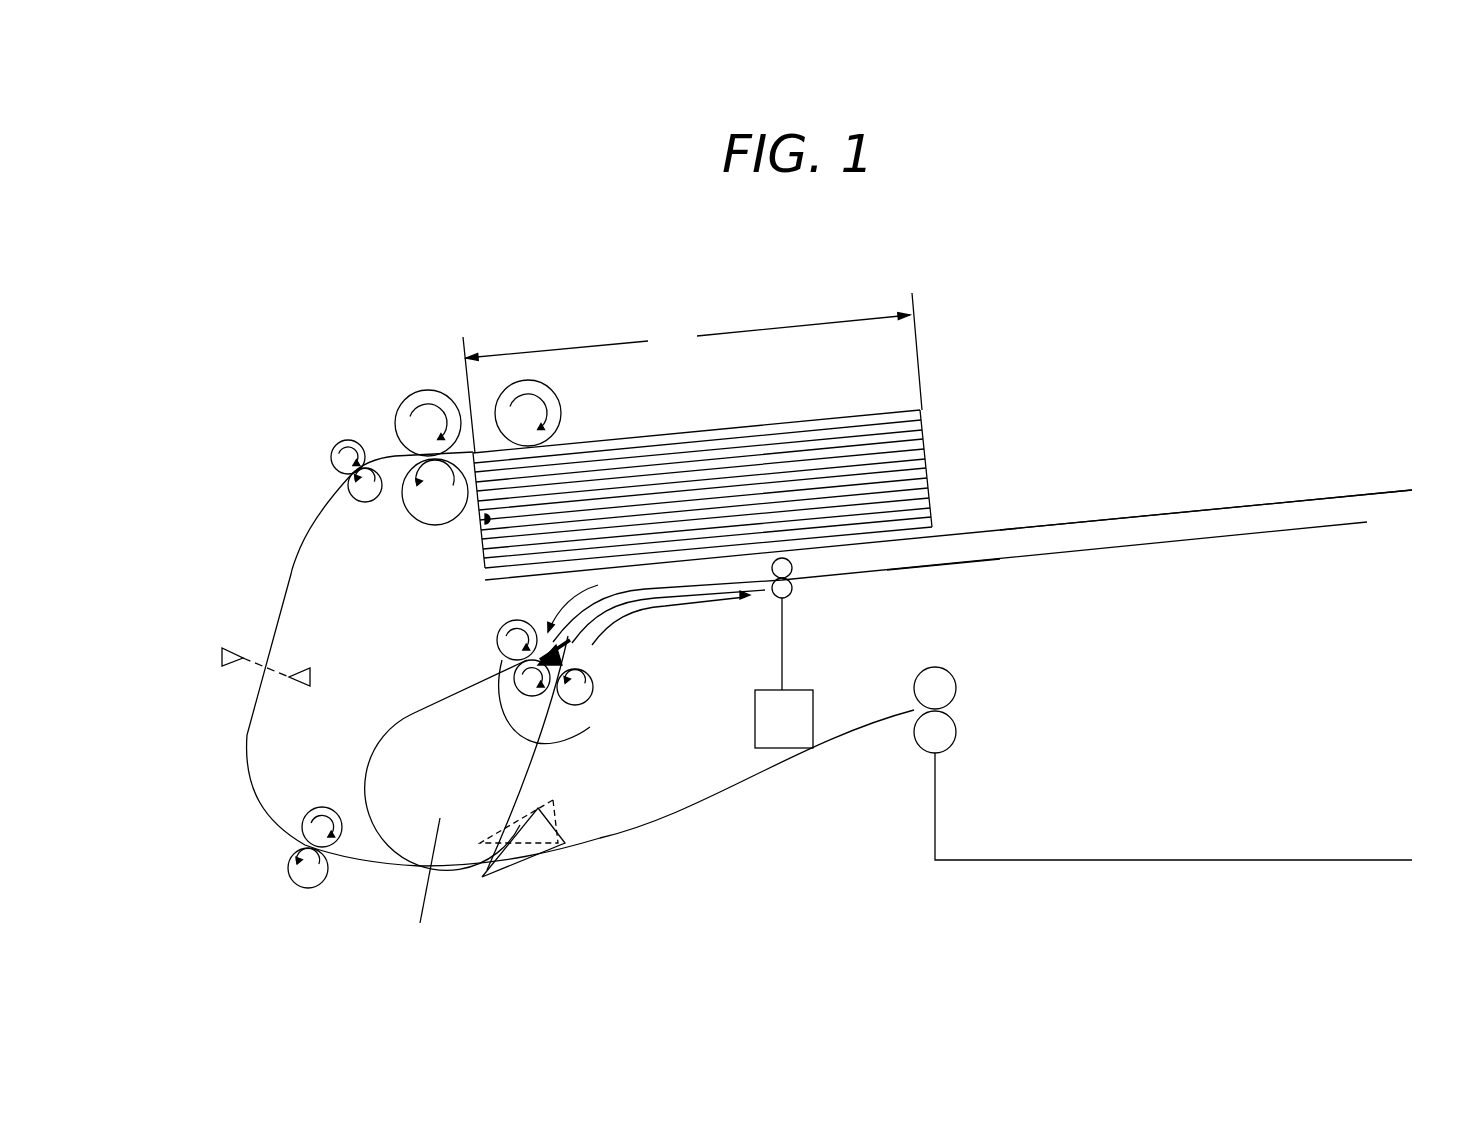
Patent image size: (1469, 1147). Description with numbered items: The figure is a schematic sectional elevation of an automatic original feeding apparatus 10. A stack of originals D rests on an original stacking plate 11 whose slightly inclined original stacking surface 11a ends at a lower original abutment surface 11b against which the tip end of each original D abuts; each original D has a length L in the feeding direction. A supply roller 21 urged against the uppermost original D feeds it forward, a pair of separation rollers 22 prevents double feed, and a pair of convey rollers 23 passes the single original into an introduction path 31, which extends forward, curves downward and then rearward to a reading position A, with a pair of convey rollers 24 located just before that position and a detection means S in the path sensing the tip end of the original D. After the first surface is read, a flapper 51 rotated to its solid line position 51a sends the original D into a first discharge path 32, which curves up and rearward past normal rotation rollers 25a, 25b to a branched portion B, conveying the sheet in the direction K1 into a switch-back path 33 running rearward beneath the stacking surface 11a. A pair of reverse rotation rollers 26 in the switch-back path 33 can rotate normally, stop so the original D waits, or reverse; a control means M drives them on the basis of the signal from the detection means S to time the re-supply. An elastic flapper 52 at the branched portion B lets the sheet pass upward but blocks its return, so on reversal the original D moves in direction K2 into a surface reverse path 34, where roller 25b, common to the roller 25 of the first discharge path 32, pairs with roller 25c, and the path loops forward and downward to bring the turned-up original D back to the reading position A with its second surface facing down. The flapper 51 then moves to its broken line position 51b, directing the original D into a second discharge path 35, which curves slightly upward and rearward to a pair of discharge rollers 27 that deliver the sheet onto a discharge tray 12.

The automatic original feeding apparatus 10 is at (805, 355).
The original stacking plate 11 is at (1000, 529).
The original stacking surface 11a is at (1074, 522).
The original abutment surface 11b is at (481, 521).
The discharge tray 12 is at (1152, 858).
The supply roller 21 is at (517, 388).
The pair of separation rollers 22 is at (420, 393).
The pair of convey rollers 23 is at (340, 447).
The pair of convey rollers 24 is at (290, 885).
The reverse rotation roller 25 is at (617, 702).
The normal rotation roller 25a is at (595, 690).
The normal rotation roller 25b is at (548, 703).
The normal rotation roller 25c is at (580, 745).
The pair of reverse rotation rollers 26 is at (795, 590).
The pair of discharge rollers 27 is at (950, 670).
The introduction path 31 is at (247, 762).
The first discharge path 32 is at (522, 783).
The switch-back path 33 is at (880, 575).
The surface reverse path 34 is at (403, 713).
The second discharge path 35 is at (737, 808).
The flapper 51 is at (575, 864).
The solid line position 51a is at (562, 832).
The broken line position 51b is at (555, 810).
The elastic flapper 52 is at (575, 645).
The reading position A is at (433, 893).
The branched portion B is at (535, 625).
The original D is at (705, 455).
The arrow direction K K1 is at (643, 612).
The direction K2 is at (562, 608).
The length of the original L is at (688, 337).
The control means M is at (795, 740).
The detection means S is at (228, 646).